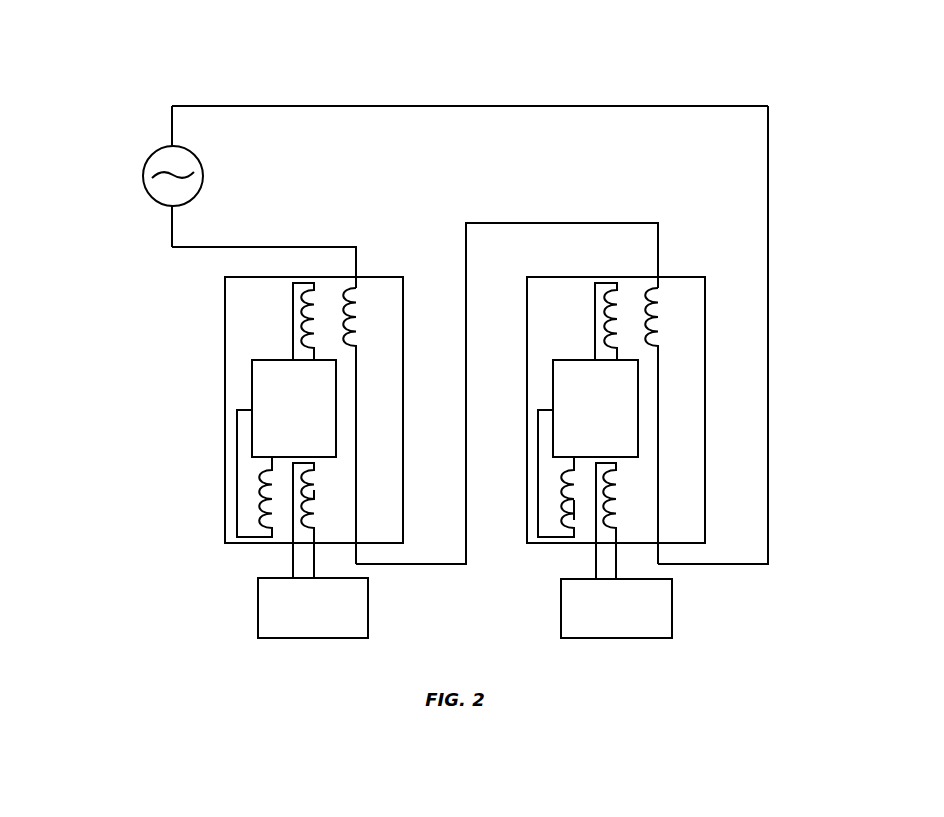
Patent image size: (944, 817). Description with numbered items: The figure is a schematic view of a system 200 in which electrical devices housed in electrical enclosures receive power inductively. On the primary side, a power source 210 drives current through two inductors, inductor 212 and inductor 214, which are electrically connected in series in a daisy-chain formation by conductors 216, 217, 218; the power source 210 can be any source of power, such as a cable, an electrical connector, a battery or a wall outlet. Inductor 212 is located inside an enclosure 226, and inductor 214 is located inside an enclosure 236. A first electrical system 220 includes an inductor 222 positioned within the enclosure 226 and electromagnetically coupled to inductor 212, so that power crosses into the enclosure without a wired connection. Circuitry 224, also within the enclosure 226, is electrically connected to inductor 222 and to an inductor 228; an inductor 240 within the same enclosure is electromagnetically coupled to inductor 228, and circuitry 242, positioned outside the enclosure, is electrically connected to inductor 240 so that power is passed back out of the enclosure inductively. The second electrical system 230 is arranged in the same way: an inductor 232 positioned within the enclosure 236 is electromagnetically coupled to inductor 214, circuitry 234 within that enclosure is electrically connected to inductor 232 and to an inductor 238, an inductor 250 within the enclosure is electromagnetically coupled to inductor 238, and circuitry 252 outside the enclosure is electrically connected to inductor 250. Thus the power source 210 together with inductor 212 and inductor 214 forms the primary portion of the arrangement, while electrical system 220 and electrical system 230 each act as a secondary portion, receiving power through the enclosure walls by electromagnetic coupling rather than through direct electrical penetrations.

The system 200 is at (748, 57).
The power source 210 is at (143, 173).
The inductor 212 is at (354, 303).
The inductor 214 is at (655, 303).
The conductor 216 is at (265, 247).
The conductor 217 is at (410, 564).
The conductor 218 is at (768, 336).
The electrical system 220 is at (201, 411).
The inductor 222 is at (300, 310).
The circuitry 224 is at (278, 420).
The enclosure 226 is at (225, 495).
The inductor 228 is at (260, 517).
The electrical system 230 is at (667, 223).
The inductor 232 is at (605, 310).
The circuitry 234 is at (580, 420).
The enclosure 236 is at (705, 409).
The inductor 238 is at (563, 520).
The inductor 240 is at (312, 497).
The circuitry 242 is at (297, 619).
The inductor 250 is at (615, 497).
The circuitry 252 is at (600, 619).